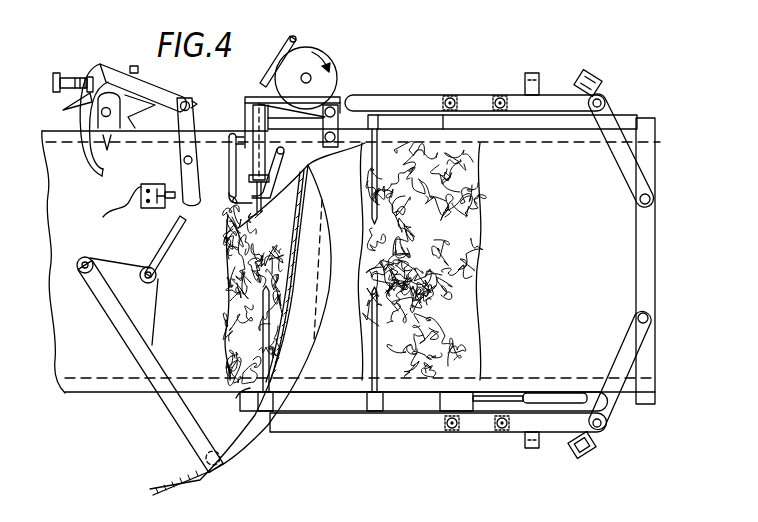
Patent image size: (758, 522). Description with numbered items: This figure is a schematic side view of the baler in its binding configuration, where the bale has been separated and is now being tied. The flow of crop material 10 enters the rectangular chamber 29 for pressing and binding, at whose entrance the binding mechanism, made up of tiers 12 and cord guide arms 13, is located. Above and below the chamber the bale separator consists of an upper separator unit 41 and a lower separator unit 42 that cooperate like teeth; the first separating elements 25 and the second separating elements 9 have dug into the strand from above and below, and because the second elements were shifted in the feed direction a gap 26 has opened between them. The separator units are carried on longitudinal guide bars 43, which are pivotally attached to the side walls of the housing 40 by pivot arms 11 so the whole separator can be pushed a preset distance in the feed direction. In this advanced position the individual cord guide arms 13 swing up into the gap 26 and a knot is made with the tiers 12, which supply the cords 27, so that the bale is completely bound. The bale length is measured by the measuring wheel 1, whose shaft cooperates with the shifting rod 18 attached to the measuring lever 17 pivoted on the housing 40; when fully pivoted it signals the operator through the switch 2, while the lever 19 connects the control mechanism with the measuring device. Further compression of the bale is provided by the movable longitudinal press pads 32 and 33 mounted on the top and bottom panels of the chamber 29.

The measuring wheel 1 is at (127, 95).
The switch 2 is at (162, 213).
The second separating element 9 is at (310, 187).
The flow of crop material 10 is at (433, 256).
The pivot arm 11 is at (640, 183).
The tier 12 is at (275, 39).
The cord guide arm 13 is at (248, 440).
The measuring lever 17 is at (178, 148).
The shifting rod 18 is at (97, 65).
The lever 19 is at (232, 197).
The first separating element 25 is at (371, 214).
The gap 26 is at (347, 368).
The cord 27 is at (317, 187).
The rectangular chamber 29 is at (198, 289).
The longitudinal press pad 32 is at (58, 135).
The longitudinal press pad 33 is at (99, 385).
The housing 40 is at (648, 262).
The upper separator unit 41 is at (523, 58).
The lower separator unit 42 is at (505, 496).
The longitudinal guide bar 43 is at (480, 101).